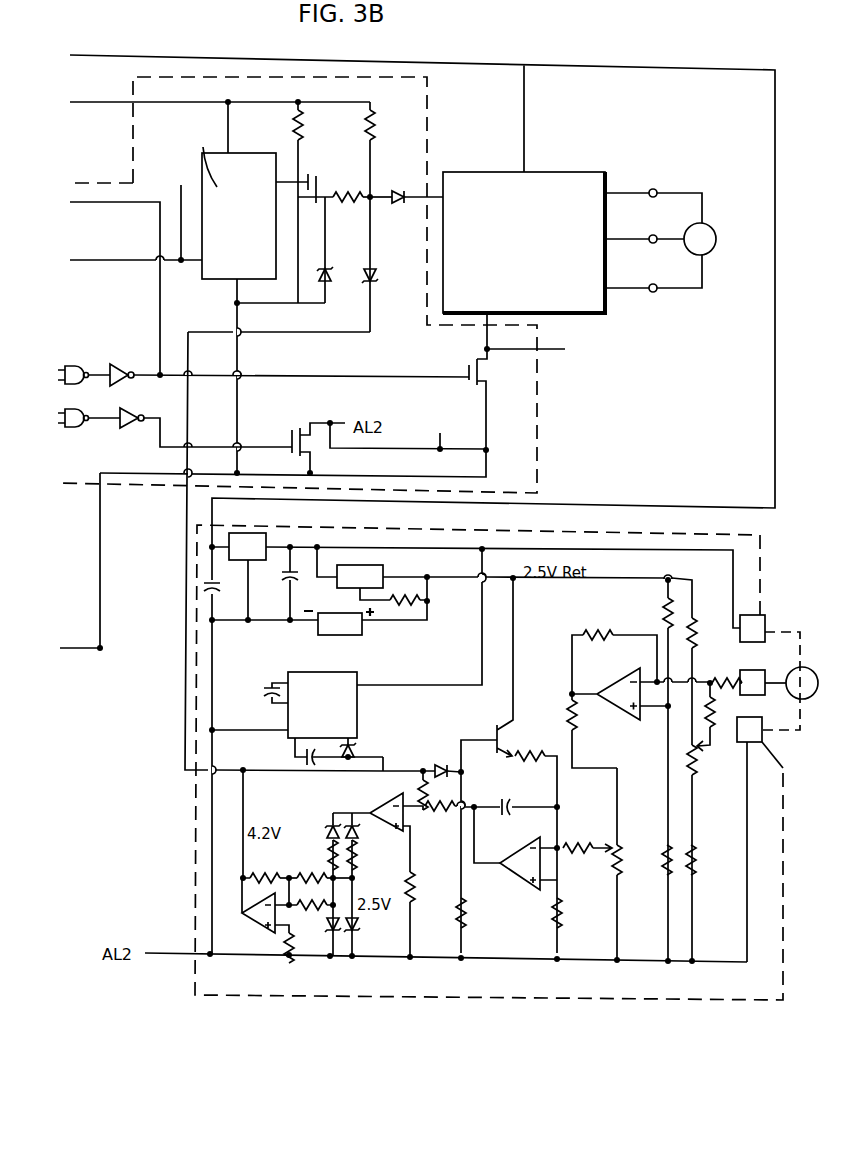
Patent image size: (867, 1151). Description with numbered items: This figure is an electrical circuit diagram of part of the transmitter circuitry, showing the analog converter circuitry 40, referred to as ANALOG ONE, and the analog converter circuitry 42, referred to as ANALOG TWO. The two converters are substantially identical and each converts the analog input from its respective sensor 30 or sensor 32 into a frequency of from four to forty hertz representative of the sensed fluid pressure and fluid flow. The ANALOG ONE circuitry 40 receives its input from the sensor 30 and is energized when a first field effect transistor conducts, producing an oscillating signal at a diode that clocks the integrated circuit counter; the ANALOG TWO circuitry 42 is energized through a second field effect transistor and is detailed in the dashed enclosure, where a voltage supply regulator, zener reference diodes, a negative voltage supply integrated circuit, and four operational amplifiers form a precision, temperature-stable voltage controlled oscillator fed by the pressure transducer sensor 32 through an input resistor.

The sensor 30 is at (709, 228).
The sensor 32 is at (792, 671).
The analog converter circuitry 40 is at (563, 172).
The analog converter circuitry 42 is at (263, 997).